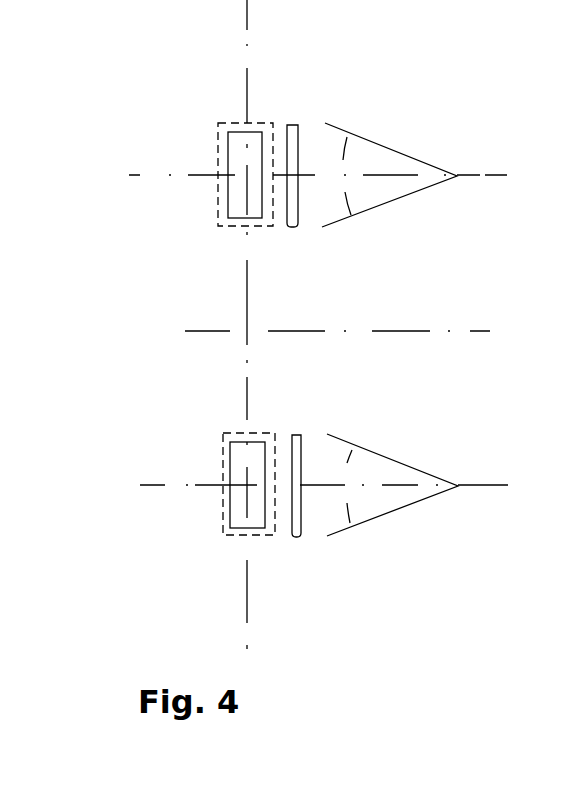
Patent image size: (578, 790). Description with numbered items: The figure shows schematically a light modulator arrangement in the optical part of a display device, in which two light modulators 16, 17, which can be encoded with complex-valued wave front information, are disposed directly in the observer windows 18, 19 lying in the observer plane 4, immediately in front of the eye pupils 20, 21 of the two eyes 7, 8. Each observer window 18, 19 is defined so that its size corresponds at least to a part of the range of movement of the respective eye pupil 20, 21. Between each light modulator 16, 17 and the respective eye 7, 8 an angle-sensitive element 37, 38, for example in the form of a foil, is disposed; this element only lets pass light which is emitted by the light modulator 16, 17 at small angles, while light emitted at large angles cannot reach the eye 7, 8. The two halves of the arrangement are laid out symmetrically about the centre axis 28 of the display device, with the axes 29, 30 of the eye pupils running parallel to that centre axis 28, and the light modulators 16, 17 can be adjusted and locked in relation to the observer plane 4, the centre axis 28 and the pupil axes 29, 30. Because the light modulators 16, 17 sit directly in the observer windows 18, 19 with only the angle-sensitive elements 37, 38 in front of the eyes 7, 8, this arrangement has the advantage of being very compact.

The observer plane 4 is at (247, 15).
The eye 7 is at (397, 148).
The eye 8 is at (402, 462).
The light modulator 16 is at (228, 218).
The light modulator 17 is at (230, 508).
The observer window 18 is at (220, 123).
The observer window 19 is at (247, 535).
The eye pupil 20 is at (345, 172).
The eye pupil 21 is at (345, 478).
The centre axis 28 is at (515, 332).
The axis of the eye pupil 29 is at (483, 177).
The axis of the eye pupil 30 is at (492, 487).
The angle-sensitive element 37 is at (288, 123).
The angle-sensitive element 38 is at (295, 543).